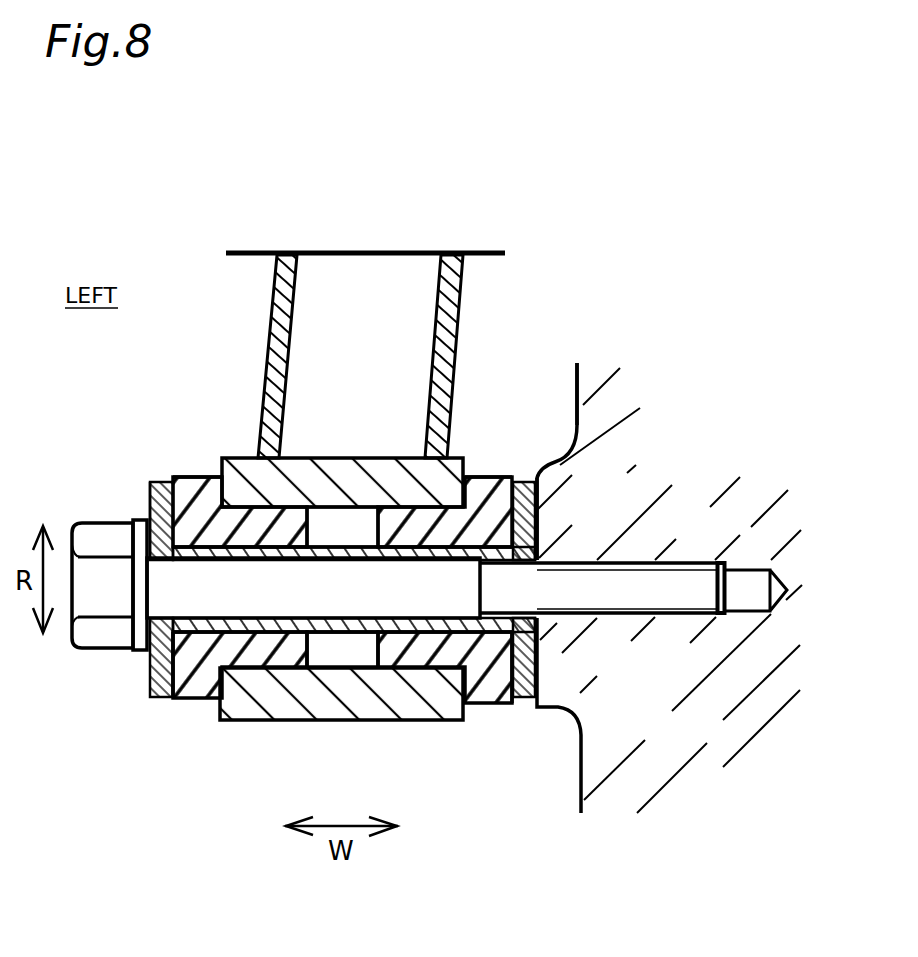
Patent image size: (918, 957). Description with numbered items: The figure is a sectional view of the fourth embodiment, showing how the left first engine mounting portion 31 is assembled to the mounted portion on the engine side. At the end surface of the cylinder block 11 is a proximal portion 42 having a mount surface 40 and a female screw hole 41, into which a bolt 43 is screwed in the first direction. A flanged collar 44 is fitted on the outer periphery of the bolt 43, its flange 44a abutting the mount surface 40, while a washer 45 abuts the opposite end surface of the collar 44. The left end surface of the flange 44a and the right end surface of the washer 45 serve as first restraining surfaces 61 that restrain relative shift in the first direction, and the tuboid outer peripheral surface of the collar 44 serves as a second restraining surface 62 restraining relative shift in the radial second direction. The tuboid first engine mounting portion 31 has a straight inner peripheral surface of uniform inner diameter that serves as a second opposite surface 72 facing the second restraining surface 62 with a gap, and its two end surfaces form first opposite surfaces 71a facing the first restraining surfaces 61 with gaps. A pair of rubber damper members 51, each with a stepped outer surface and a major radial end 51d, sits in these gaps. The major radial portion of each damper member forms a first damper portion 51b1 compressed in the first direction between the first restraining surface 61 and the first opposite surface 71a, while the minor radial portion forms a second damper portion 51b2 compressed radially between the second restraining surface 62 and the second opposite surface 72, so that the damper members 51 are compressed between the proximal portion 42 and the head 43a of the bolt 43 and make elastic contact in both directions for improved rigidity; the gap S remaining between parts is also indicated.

The cylinder block 11 is at (730, 441).
The first engine mounting portion 31 is at (348, 450).
The mount surface 40 is at (523, 465).
The female screw hole 41 is at (637, 607).
The proximal portion 42 is at (567, 693).
The bolt 43 is at (413, 605).
The head 43a is at (112, 597).
The collar 44 is at (280, 577).
The flange 44a is at (540, 513).
The washer 45 is at (150, 483).
The damper member 51 is at (275, 508).
The first damper portion 51b1 is at (192, 493).
The second damper portion 51b2 is at (242, 550).
The major radial end 51d is at (148, 667).
The first restraining surface 61 is at (150, 507).
The second restraining surface 62 is at (328, 542).
The first opposite surface 71a is at (216, 467).
The second opposite surface 72 is at (315, 668).
The gap (space) S is at (353, 650).